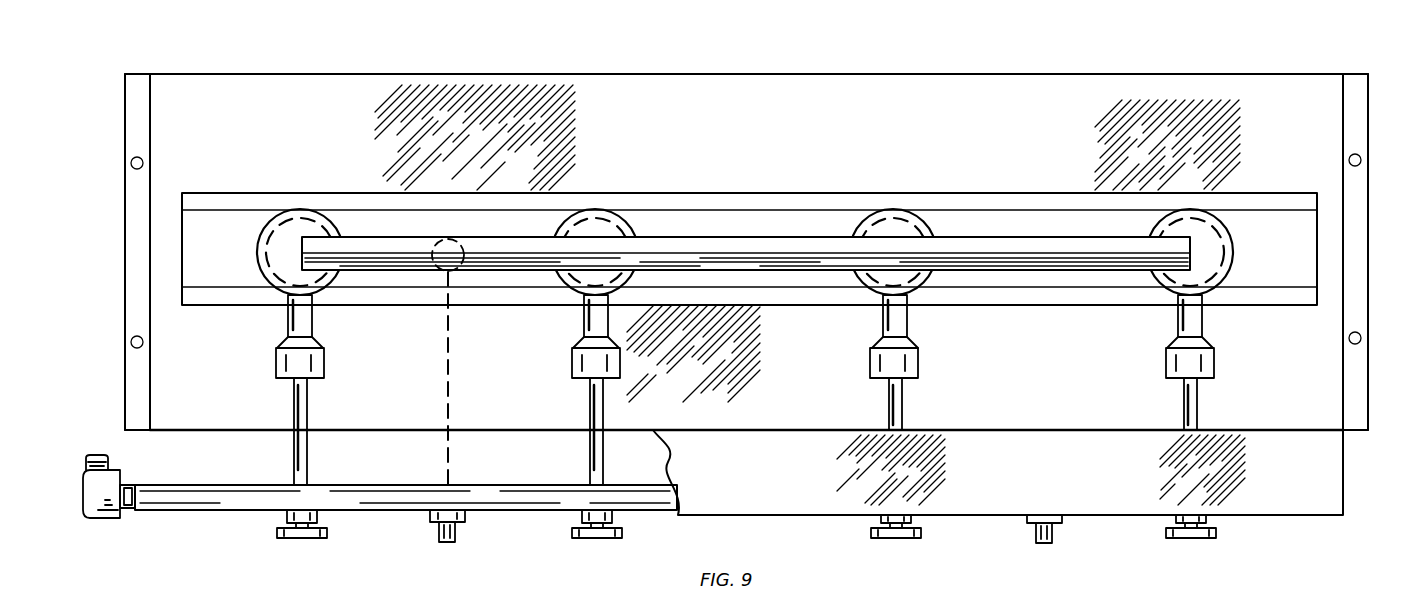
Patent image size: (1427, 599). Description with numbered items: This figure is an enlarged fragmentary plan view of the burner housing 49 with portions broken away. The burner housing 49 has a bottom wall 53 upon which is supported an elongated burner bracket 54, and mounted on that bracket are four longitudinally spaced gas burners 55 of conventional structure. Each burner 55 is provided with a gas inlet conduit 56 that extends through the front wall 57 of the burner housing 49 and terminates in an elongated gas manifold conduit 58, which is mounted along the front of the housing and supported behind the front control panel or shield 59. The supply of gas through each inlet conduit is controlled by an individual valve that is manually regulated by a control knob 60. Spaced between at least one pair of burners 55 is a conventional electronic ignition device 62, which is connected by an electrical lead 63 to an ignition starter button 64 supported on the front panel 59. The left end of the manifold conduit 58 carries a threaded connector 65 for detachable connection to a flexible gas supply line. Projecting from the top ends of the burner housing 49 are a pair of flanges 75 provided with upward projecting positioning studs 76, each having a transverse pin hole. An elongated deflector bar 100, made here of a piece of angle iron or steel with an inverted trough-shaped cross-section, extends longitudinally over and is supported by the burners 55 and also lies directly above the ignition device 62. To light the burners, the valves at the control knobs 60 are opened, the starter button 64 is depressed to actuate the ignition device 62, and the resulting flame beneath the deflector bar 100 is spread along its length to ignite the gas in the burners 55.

The burner housing 49 is at (1010, 37).
The bottom wall 53 is at (972, 128).
The burner bracket 54 is at (1290, 247).
The gas burners 55 is at (758, 231).
The gas inlet conduit 56 is at (350, 357).
The front wall 57 is at (746, 414).
The gas manifold conduit 58 is at (406, 517).
The front control panel 59 is at (998, 495).
The control knob 60 is at (745, 540).
The electronic ignition device 62 is at (452, 240).
The electrical lead 63 is at (449, 333).
The ignition starter button 64 is at (755, 540).
The threaded connector 65 is at (104, 455).
The flanges 75 is at (140, 372).
The positioning studs 76 is at (97, 257).
The deflector bar 100 is at (746, 207).